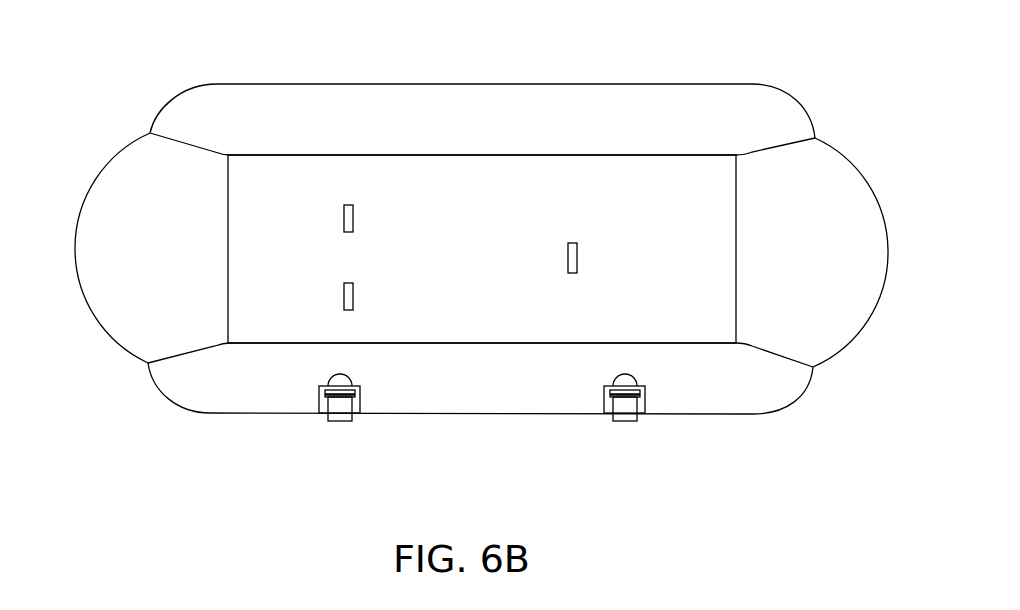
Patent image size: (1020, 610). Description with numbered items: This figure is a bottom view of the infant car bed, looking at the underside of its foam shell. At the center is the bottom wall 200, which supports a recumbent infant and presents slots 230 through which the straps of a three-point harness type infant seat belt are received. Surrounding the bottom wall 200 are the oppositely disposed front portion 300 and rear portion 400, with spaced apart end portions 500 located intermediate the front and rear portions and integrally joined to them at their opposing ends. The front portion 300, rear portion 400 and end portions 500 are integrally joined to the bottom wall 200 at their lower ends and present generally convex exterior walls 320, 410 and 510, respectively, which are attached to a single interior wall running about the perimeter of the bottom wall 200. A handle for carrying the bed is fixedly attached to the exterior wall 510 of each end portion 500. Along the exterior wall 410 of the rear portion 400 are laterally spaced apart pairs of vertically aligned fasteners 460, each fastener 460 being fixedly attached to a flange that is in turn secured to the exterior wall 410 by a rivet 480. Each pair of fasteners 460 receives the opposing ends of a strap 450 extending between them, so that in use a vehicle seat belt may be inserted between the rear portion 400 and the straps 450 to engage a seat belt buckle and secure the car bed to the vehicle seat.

The bottom wall 200 is at (292, 212).
The slots 230 is at (353, 293).
The front portion 300 is at (712, 85).
The exterior wall of the front portion 320 is at (270, 103).
The rear portion 400 is at (788, 400).
The exterior wall of the rear portion 410 is at (278, 387).
The strap 450 is at (342, 415).
The fastener 460 is at (362, 393).
The rivet 480 is at (343, 382).
The end portions 500 is at (115, 157).
The exterior wall of the end portion 510 is at (125, 315).